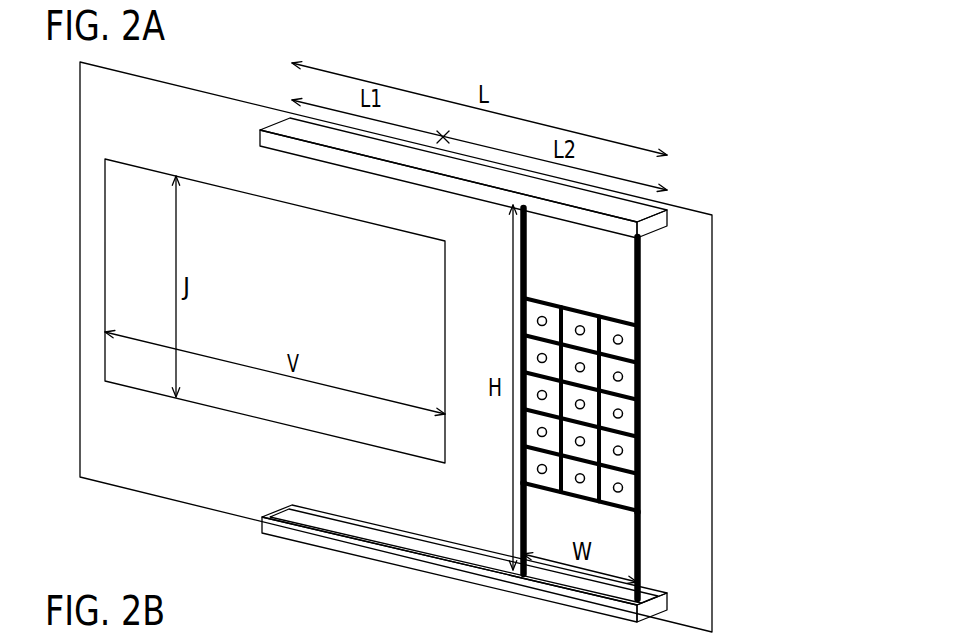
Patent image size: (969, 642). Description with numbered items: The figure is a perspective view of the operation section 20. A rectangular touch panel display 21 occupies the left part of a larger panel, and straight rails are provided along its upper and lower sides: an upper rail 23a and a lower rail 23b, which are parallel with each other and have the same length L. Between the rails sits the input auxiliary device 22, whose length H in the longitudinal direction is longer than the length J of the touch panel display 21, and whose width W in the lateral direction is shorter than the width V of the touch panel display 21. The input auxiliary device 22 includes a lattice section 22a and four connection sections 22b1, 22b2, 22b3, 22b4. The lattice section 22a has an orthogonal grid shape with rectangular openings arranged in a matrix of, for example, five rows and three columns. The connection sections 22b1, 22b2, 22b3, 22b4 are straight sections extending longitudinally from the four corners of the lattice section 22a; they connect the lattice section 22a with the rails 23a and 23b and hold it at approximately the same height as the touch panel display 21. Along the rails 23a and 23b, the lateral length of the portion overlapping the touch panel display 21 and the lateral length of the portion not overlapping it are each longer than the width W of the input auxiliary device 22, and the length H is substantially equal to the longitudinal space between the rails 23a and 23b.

The operation section 20 is at (656, 90).
The touch panel display 21 is at (233, 311).
The input auxiliary device 22 is at (626, 422).
The lattice section 22a is at (661, 404).
The connection section 22b1 is at (568, 345).
The connection section 22b2 is at (723, 374).
The connection section 22b3 is at (485, 528).
The connection section 22b4 is at (723, 574).
The upper rail 23a is at (432, 148).
The lower rail 23b is at (464, 563).